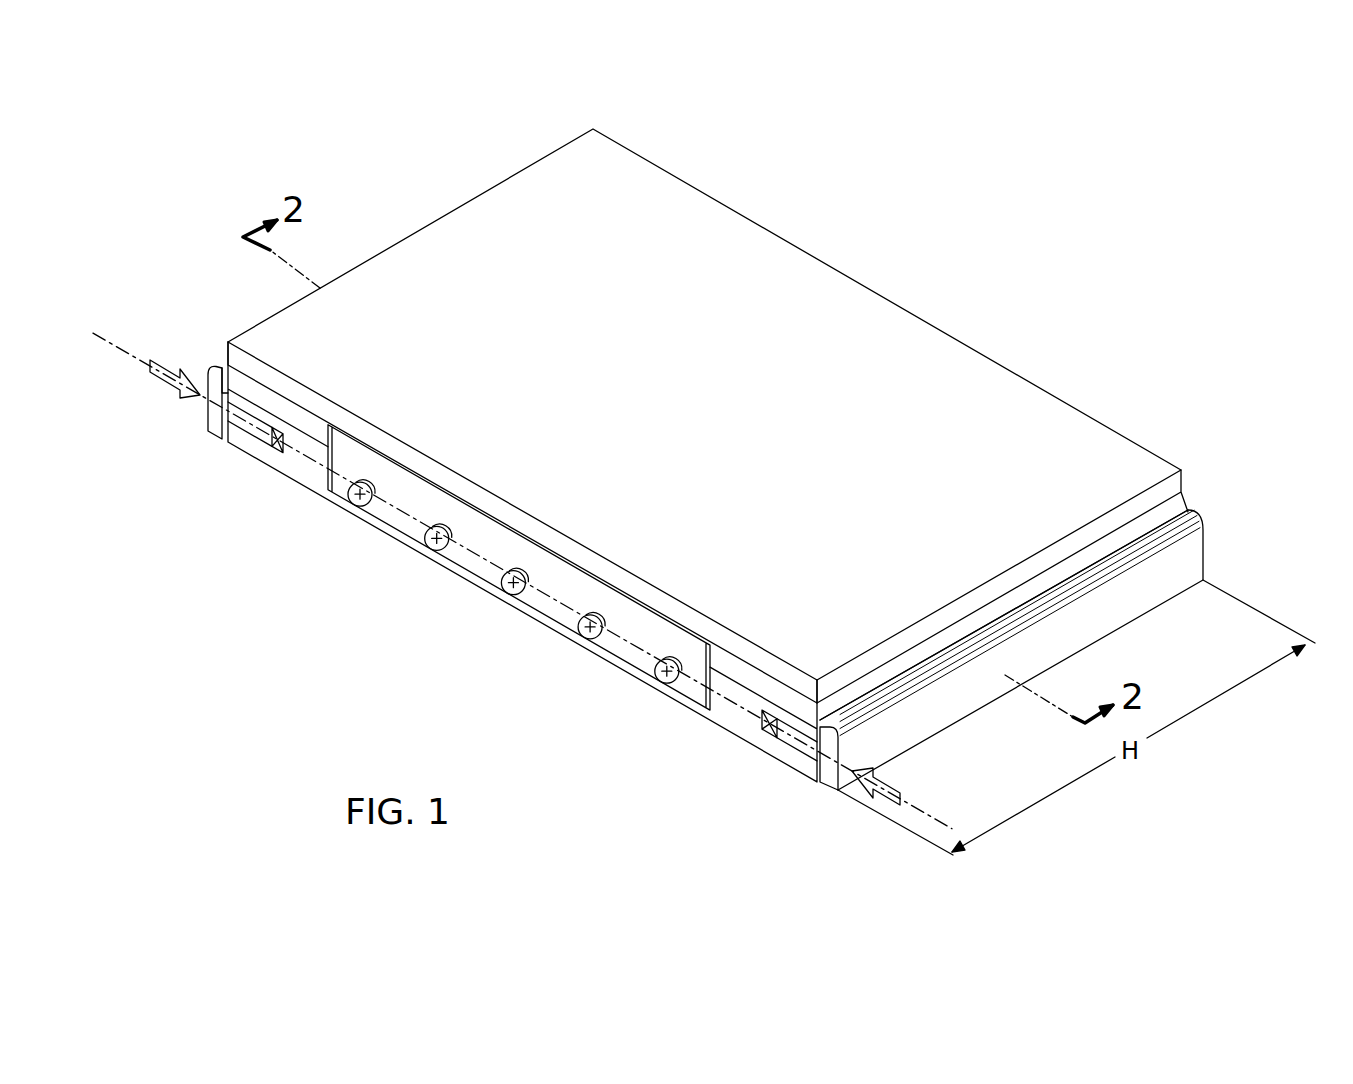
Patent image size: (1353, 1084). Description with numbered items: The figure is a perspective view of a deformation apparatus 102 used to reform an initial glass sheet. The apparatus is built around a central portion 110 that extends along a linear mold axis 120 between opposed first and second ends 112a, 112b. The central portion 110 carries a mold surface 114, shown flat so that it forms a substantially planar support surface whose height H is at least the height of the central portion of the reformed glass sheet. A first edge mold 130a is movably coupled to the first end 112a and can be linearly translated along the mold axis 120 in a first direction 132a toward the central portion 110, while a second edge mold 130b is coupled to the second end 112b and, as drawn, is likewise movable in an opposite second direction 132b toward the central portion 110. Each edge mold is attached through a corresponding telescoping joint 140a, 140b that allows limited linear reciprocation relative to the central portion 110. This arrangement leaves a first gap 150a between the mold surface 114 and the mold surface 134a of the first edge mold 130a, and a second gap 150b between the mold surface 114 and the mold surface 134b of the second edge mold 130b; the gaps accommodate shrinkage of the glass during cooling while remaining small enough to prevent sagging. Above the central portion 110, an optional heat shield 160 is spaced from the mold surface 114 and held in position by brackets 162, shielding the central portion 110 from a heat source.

The deformation apparatus 102 is at (917, 255).
The heat shield 160 is at (740, 248).
The first gap 150a is at (270, 366).
The second gap 150b is at (865, 697).
The central portion 110 is at (637, 678).
The mold surface 114 is at (320, 422).
The brackets 162 is at (553, 607).
The first end 112a is at (246, 452).
The second end 112b is at (798, 777).
The telescoping joint 140a is at (272, 448).
The telescoping joint 140b is at (775, 747).
The first edge mold 130a is at (208, 433).
The second edge mold 130b is at (830, 793).
The mold surface of the first edge mold 134a is at (223, 370).
The mold surface of the second edge mold 134b is at (1190, 526).
The first direction 132a is at (162, 378).
The second direction 132b is at (897, 782).
The linear mold axis 120 is at (942, 818).